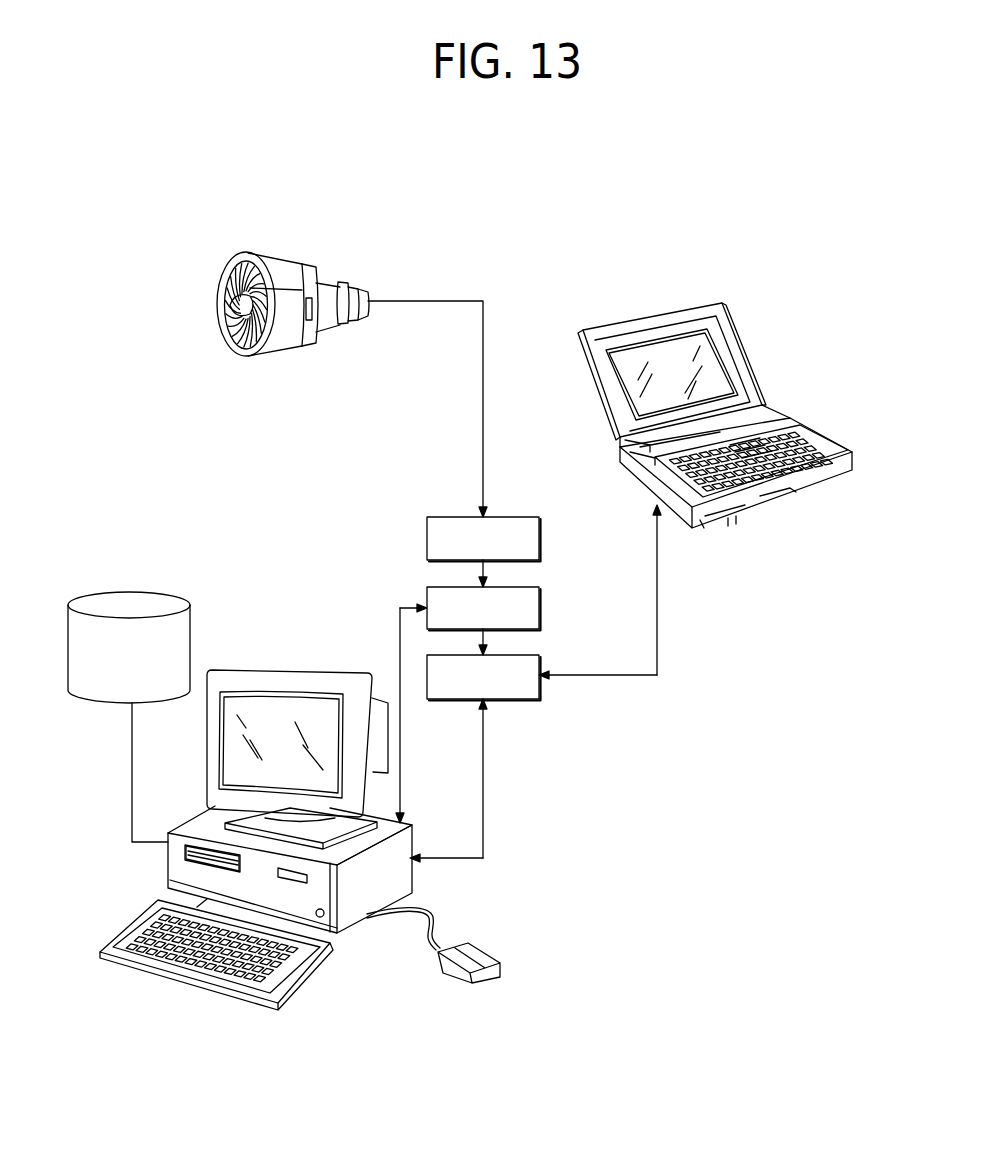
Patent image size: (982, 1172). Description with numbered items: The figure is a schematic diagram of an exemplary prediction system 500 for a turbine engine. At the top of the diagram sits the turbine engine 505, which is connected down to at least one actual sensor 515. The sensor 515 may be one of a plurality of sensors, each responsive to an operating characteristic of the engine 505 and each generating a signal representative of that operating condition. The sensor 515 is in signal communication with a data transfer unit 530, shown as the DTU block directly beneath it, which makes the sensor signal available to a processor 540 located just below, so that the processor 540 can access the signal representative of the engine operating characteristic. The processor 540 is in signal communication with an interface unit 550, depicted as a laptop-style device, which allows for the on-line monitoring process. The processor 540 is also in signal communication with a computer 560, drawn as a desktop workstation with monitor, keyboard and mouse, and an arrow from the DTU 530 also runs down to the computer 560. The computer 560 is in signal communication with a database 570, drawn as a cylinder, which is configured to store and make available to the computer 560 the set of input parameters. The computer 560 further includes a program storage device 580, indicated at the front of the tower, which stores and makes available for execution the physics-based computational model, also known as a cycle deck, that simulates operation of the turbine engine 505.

The prediction system 500 is at (152, 217).
The turbine engine 505 is at (355, 282).
The actual sensor 515 is at (540, 535).
The data transfer unit (DTU) 530 is at (540, 607).
The processor 540 is at (540, 665).
The interface unit 550 is at (747, 355).
The computer 560 is at (410, 875).
The database 570 is at (122, 590).
The program storage device 580 is at (183, 857).